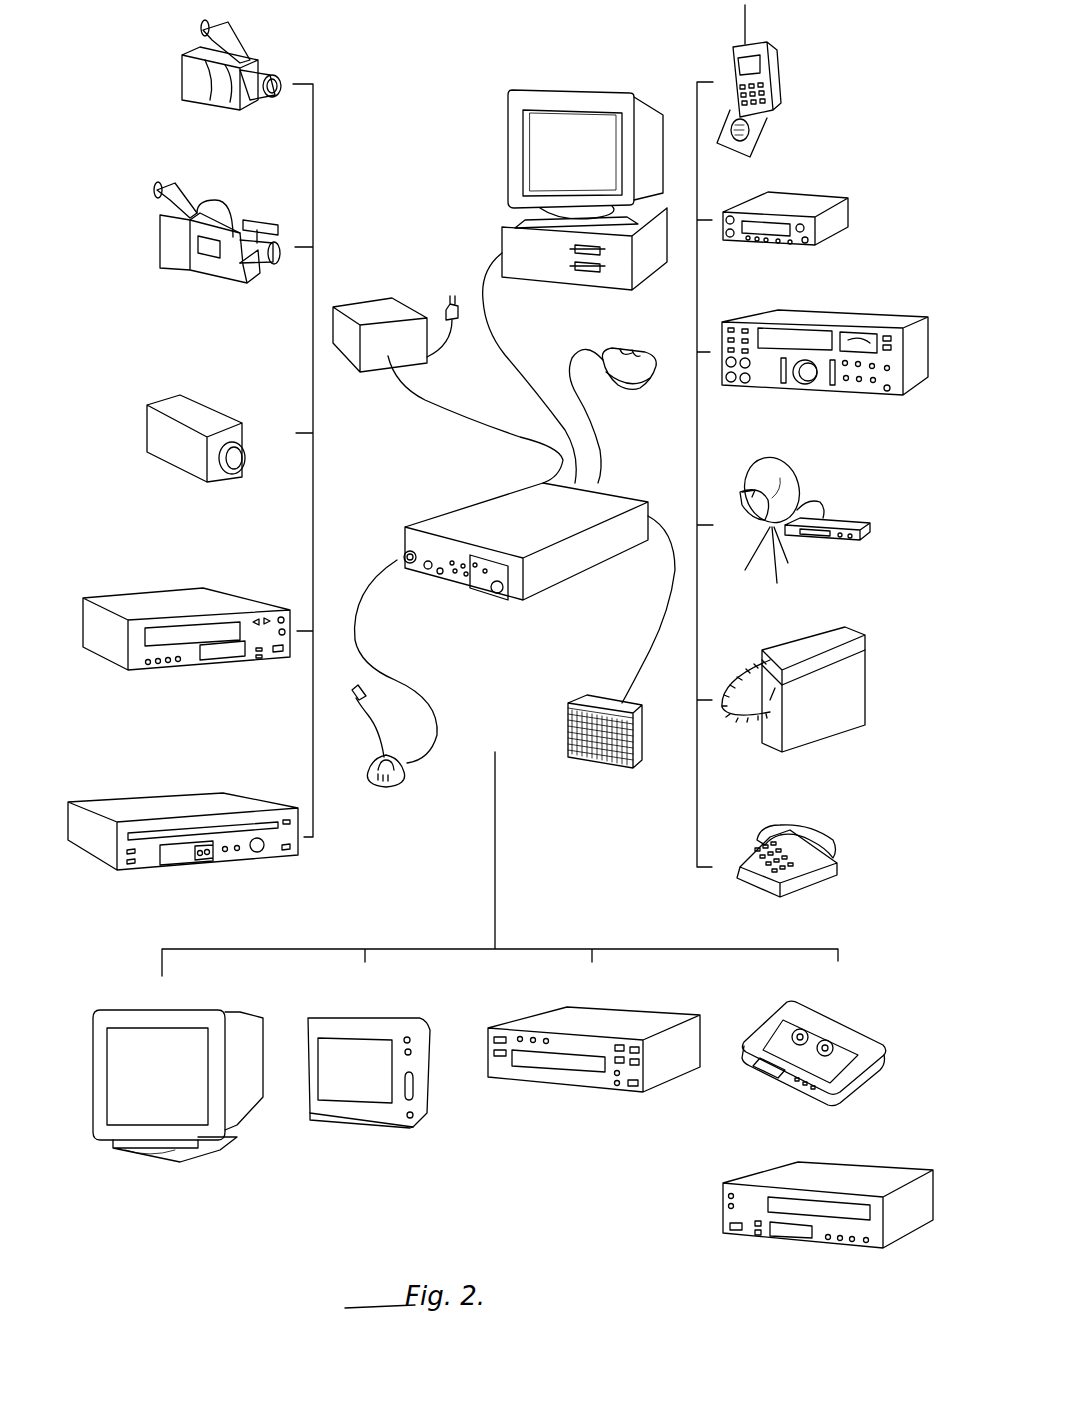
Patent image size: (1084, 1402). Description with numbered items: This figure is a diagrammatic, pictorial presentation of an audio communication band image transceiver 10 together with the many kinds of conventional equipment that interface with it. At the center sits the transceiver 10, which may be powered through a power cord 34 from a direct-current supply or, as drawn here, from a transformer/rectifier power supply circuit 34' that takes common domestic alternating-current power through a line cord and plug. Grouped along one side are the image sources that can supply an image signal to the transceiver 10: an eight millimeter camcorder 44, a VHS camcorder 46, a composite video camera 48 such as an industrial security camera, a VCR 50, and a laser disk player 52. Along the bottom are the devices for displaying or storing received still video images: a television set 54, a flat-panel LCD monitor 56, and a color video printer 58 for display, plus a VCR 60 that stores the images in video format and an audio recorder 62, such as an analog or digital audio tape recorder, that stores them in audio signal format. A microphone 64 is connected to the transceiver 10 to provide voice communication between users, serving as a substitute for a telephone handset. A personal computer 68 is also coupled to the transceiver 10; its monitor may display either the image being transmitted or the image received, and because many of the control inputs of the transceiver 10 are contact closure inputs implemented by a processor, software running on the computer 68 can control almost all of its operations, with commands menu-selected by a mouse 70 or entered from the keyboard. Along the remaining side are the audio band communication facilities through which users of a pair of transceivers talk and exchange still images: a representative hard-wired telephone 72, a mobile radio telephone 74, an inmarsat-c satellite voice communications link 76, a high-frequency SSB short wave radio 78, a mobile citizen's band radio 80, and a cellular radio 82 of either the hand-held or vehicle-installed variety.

The transceiver 10 is at (444, 510).
The power cord 34 is at (475, 419).
The transformer/rectifier power supply circuit 34' is at (394, 315).
The 8 mm camcorder 44 is at (180, 80).
The VHS camcorder 46 is at (158, 243).
The composite video camera 48 is at (167, 468).
The VCR 50 is at (128, 590).
The laser disk player 52 is at (127, 793).
The television set 54 is at (172, 1165).
The flat-panel LCD monitor 56 is at (380, 1130).
The color video printer 58 is at (588, 1093).
The VCR 60 is at (865, 1162).
The audio recorder 62 is at (860, 1028).
The microphone 64 is at (350, 710).
The personal computer 68 is at (510, 124).
The mouse 70 is at (642, 396).
The telephone 72 is at (836, 840).
The mobile radio telephone 74 is at (870, 668).
The inmarsat-c satellite voice communications link 76 is at (872, 527).
The high-frequency SSB short wave radio 78 is at (873, 313).
The mobile citizen's band radio 80 is at (851, 213).
The cellular radio 82 is at (784, 87).